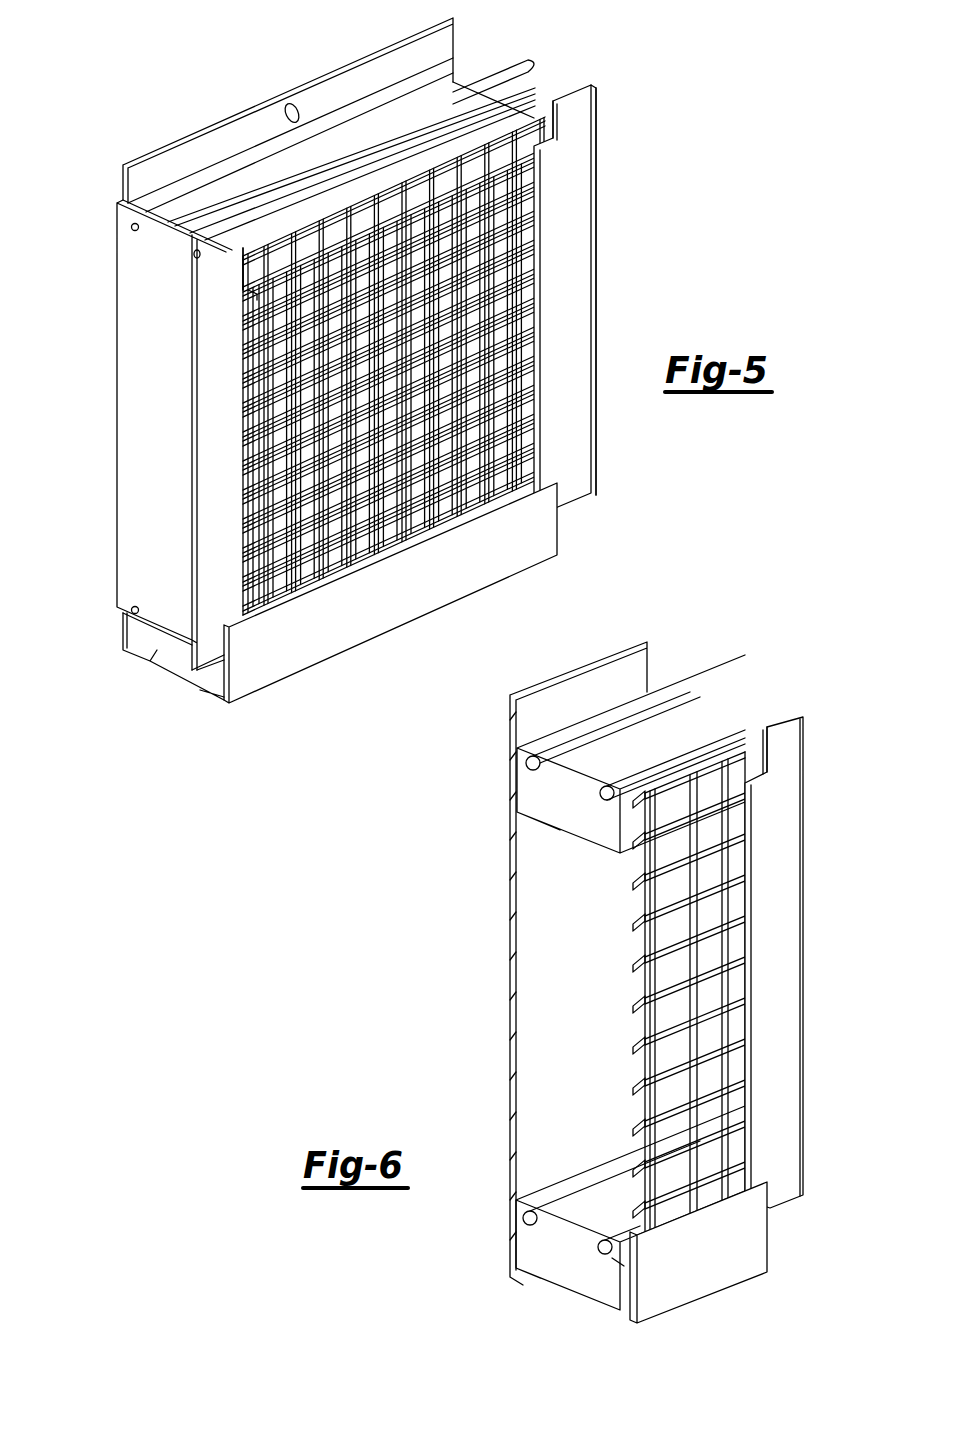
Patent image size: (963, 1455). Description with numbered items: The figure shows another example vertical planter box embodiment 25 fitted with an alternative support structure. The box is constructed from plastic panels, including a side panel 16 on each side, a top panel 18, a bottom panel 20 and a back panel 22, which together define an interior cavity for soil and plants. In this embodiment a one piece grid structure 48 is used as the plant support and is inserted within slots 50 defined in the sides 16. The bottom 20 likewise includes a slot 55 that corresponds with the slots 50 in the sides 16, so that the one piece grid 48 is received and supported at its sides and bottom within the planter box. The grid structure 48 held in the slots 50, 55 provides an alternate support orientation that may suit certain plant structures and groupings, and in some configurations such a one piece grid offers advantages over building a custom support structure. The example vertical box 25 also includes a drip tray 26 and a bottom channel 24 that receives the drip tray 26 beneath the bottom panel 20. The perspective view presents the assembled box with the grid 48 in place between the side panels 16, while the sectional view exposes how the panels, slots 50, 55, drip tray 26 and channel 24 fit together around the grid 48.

In FIG. 5, the side panel 16 is at (217, 358).
In FIG. 5, the top panel 18 is at (460, 117).
In FIG. 6, the top panel 18 is at (660, 753).
In FIG. 5, the bottom panel 20 is at (541, 540).
In FIG. 6, the bottom panel 20 is at (742, 1247).
In FIG. 6, the back panel 22 is at (565, 920).
In FIG. 5, the bottom channel 24 is at (125, 633).
In FIG. 5, the vertical planter box embodiment 25 is at (648, 115).
In FIG. 6, the vertical planter box embodiment 25 is at (830, 717).
In FIG. 5, the drip tray 26 is at (183, 655).
In FIG. 6, the drip tray 26 is at (580, 1272).
In FIG. 5, the one piece grid structure 48 is at (528, 290).
In FIG. 6, the one piece grid structure 48 is at (735, 885).
In FIG. 5, the slots 50 is at (240, 250).
In FIG. 6, the slots 50 is at (762, 720).
In FIG. 6, the slot 55 is at (618, 1262).